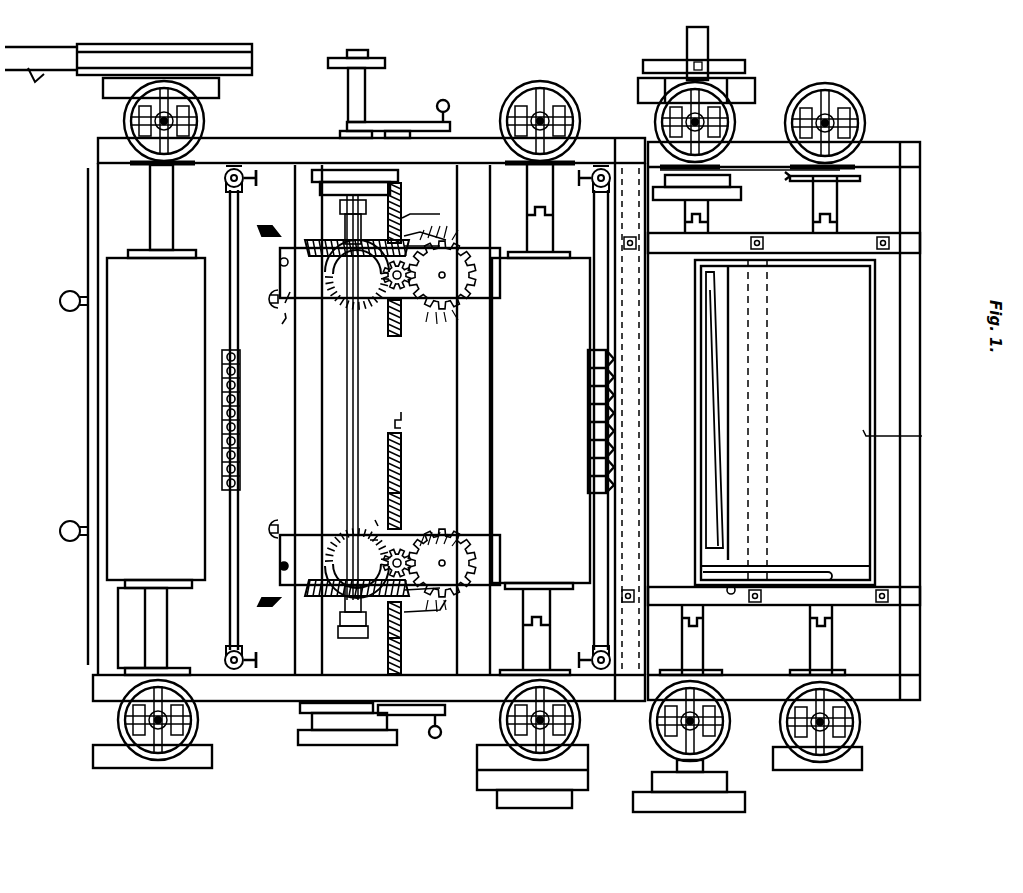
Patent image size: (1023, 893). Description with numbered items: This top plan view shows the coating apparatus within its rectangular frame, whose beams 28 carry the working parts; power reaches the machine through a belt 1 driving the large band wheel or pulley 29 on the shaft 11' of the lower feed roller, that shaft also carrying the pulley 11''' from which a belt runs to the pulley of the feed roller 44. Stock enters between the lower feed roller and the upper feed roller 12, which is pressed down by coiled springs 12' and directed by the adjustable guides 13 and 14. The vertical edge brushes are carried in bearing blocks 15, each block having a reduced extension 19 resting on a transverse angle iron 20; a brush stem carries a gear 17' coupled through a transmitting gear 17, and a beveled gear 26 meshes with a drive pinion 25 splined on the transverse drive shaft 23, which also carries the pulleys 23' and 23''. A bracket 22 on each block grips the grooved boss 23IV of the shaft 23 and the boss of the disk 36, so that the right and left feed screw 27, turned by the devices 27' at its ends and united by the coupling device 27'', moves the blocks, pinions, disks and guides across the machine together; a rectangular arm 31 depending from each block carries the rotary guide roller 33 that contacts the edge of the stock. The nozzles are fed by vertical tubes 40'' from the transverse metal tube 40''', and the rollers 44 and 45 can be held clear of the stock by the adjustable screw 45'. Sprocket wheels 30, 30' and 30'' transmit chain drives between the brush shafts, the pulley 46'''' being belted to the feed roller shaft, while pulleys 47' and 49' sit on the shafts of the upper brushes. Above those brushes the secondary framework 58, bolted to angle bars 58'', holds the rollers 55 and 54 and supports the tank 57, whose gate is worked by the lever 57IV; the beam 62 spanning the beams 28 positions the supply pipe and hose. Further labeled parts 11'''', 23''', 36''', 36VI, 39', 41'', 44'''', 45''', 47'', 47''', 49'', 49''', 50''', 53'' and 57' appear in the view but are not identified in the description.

The belt 1 is at (36, 84).
The shaft 11' is at (168, 211).
The pulley 11''' is at (173, 760).
The base block 11'''' is at (182, 88).
The feed roller 12 is at (156, 466).
The coiled springs 12' is at (177, 420).
The adjustable guide 13 is at (60, 532).
The adjustable guide 14 is at (60, 302).
The bearing block 15 is at (312, 275).
The transmitting gear 17 is at (434, 419).
The gear 17' is at (459, 419).
The reduced extension 19 is at (462, 183).
The angle iron 20 is at (300, 205).
The bracket 22 is at (420, 236).
The drive shaft 23 is at (342, 397).
The pulley 23' is at (355, 168).
The pulley 23'' is at (364, 742).
The shaft portion 23''' is at (339, 345).
The grooved boss 23IV is at (320, 622).
The drive pinion 25 is at (312, 246).
The beveled gear 26 is at (335, 290).
The right and left feed screw 27 is at (383, 428).
The operating device 27' is at (407, 418).
The coupling device 27'' is at (417, 420).
The beam 28 is at (289, 151).
The band wheel 29 is at (252, 72).
The sprocket wheel 30 is at (712, 53).
The sprocket wheel 30' is at (750, 166).
The sprocket wheel 30'' is at (845, 180).
The rectangular arm 31 is at (327, 416).
The guide roller 33 is at (270, 310).
The disk 36 is at (265, 424).
The standard 36''' is at (345, 79).
The base block 36VI is at (308, 704).
The pin 39' is at (268, 572).
The vertical tubes 40'' is at (234, 420).
The metal tube 40''' is at (215, 227).
The handle 41'' is at (272, 418).
The feed roller 44 is at (519, 776).
The base block 44'''' is at (609, 752).
The roller 45 is at (541, 420).
The adjustable screw 45' is at (556, 420).
The standard 45''' is at (545, 420).
The pulley 46'''' is at (721, 90).
The pulley 47' is at (707, 421).
The base block 47'' is at (709, 786).
The rack rod 47''' is at (662, 420).
The pulley 49' is at (838, 422).
The base block 49'' is at (838, 758).
The standard 49''' is at (796, 632).
The clevis 50''' is at (594, 406).
The plate 53'' is at (720, 188).
The roller 54 is at (785, 422).
The pocketed roller 55 is at (690, 410).
The tank 57 is at (910, 436).
The valve 57' is at (717, 595).
The lever 57IV is at (830, 572).
The framework 58 is at (829, 425).
The angle bars 58'' is at (686, 437).
The beam 62 is at (629, 690).